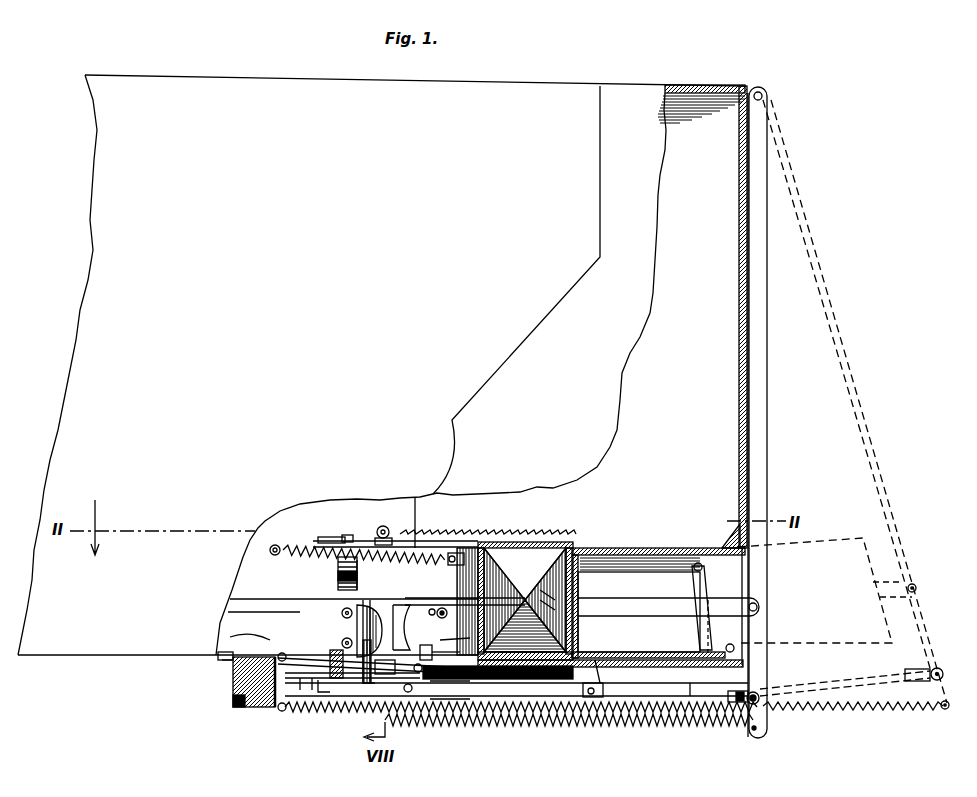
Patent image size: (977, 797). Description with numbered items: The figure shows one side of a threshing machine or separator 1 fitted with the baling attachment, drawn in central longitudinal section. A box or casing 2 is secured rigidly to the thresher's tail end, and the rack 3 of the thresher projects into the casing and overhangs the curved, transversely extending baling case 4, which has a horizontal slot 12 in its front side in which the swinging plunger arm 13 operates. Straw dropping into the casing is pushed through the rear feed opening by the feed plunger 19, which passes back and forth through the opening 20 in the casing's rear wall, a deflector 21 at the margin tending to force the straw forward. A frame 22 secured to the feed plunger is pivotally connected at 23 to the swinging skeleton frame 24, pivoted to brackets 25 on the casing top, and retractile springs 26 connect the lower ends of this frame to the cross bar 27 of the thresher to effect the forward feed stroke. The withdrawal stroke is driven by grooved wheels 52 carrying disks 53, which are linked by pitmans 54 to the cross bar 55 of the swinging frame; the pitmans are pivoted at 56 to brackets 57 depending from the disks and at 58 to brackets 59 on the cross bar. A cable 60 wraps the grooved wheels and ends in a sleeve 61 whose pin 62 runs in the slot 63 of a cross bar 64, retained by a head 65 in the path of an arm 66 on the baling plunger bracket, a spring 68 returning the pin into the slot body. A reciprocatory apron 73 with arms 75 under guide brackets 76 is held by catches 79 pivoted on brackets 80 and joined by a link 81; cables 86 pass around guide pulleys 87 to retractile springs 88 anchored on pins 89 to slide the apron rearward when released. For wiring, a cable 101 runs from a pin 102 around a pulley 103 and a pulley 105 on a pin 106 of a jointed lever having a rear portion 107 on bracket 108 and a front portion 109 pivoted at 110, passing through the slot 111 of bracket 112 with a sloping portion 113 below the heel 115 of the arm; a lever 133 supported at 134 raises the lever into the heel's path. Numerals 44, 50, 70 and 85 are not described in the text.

The threshing machine or separator 1 is at (381, 365).
The box or casing 2 is at (449, 374).
The rack 3 is at (446, 531).
The baling case 4 is at (535, 542).
The horizontal slot 12 is at (497, 600).
The plunger arm 13 is at (262, 597).
The feed plunger 19 is at (690, 552).
The opening 20 is at (742, 554).
The deflector 21 is at (730, 536).
The frame 22 is at (684, 610).
The pivotal connection 23 is at (760, 608).
The swinging skeleton frame 24 is at (762, 415).
The brackets 25 is at (762, 92).
The retractile springs 26 is at (660, 712).
The cross bar 27 is at (240, 700).
The bar 44 is at (438, 610).
The pivot 50 is at (405, 605).
The grooved wheels 52 is at (632, 696).
The disks 53 is at (656, 696).
The pitmans 54 is at (690, 697).
The cross bar of swinging frame 55 is at (760, 697).
The pivot 56 is at (402, 693).
The brackets 57 is at (418, 672).
The pivot 58 is at (752, 690).
The brackets 59 is at (780, 686).
The cable 60 is at (575, 673).
The sleeve 61 is at (430, 680).
The pin 62 is at (445, 690).
The slot 63 is at (450, 628).
The cross bar 64 is at (446, 653).
The enlargement or head 65 is at (525, 626).
The arm 66 is at (420, 618).
The spring 68 is at (522, 641).
The housing 70 is at (612, 583).
The reciprocatory apron 73 is at (508, 541).
The arms 75 is at (332, 539).
The guide brackets 76 is at (386, 526).
The catches 79 is at (348, 535).
The brackets 80 is at (338, 585).
The link 81 is at (352, 588).
The pin 85 is at (543, 594).
The cables 86 is at (418, 522).
The guide pulleys 87 is at (458, 553).
The retractile springs 88 is at (330, 556).
The pins 89 is at (273, 555).
The cable 101 is at (298, 680).
The pin 102 is at (325, 692).
The pulley 103 is at (280, 705).
The pulley 105 is at (305, 690).
The pin 106 is at (357, 630).
The rear portion of jointed lever 107 is at (220, 658).
The bracket 108 is at (228, 662).
The front portion of jointed lever 109 is at (290, 660).
The pivot 110 is at (247, 627).
The horizontal slot 111 is at (342, 641).
The bracket 112 is at (342, 613).
The sloping portion 113 is at (338, 680).
The heel 115 is at (384, 675).
The lever 133 is at (350, 672).
The support 134 is at (262, 605).